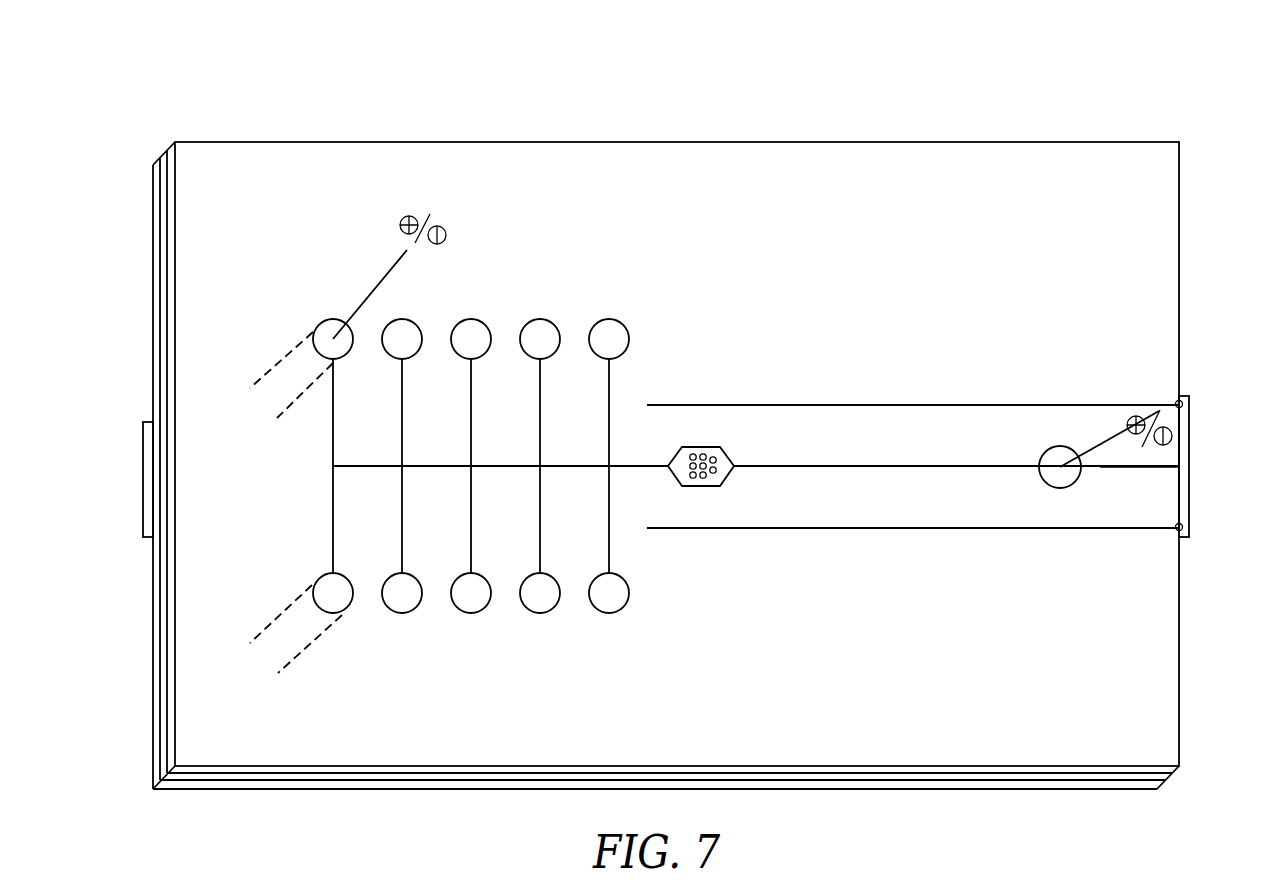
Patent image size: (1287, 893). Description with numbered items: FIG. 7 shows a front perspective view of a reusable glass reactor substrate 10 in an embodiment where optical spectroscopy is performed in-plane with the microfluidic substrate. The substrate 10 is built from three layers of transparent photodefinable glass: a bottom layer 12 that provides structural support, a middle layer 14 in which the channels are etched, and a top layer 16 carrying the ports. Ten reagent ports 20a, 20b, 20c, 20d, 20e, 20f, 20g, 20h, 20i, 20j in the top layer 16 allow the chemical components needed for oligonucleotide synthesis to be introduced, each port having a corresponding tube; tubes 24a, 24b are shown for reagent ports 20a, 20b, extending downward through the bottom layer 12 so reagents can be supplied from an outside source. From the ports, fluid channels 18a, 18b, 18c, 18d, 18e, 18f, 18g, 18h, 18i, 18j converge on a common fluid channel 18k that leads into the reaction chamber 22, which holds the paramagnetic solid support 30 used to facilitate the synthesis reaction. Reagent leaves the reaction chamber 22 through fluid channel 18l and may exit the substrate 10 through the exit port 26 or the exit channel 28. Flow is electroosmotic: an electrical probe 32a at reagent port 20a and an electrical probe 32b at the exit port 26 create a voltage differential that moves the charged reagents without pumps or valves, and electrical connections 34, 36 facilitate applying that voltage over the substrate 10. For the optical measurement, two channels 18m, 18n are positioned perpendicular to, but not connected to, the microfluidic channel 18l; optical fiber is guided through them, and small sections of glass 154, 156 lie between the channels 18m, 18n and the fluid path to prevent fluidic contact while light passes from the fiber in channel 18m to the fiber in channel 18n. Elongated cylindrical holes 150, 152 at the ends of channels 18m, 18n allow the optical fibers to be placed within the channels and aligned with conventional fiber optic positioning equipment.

The reusable glass reactor substrate 10 is at (113, 123).
The bottom layer 12 is at (157, 312).
The middle layer 14 is at (175, 772).
The top layer 16 is at (172, 560).
The electrical connection 34 is at (143, 480).
The electrical connection 36 is at (1192, 452).
The elongated cylindrical hole 150 is at (1177, 401).
The elongated cylindrical hole 152 is at (1177, 532).
The section of glass 154 is at (934, 444).
The section of glass 156 is at (934, 514).
The fluid channel 18a is at (332, 436).
The fluid channel 18b is at (332, 495).
The fluid channel 18c is at (402, 393).
The fluid channel 18d is at (402, 539).
The fluid channel 18e is at (471, 437).
The fluid channel 18f is at (471, 495).
The fluid channel 18g is at (540, 393).
The fluid channel 18h is at (540, 539).
The fluid channel 18i is at (609, 437).
The fluid channel 18j is at (609, 495).
The fluid channel 18k is at (644, 465).
The fluid channel 18l is at (843, 466).
The optical channel 18m is at (772, 404).
The optical channel 18n is at (772, 528).
The reagent port 20a is at (333, 318).
The reagent port 20b is at (342, 612).
The reagent port 20c is at (402, 318).
The reagent port 20d is at (404, 613).
The reagent port 20e is at (471, 318).
The reagent port 20f is at (473, 613).
The reagent port 20g is at (540, 318).
The reagent port 20h is at (542, 613).
The reagent port 20i is at (609, 318).
The reagent port 20j is at (611, 613).
The reaction chamber 22 is at (700, 447).
The tube 24a is at (292, 346).
The tube 24b is at (290, 662).
The exit port 26 is at (1059, 446).
The exit channel 28 is at (1140, 467).
The paramagnetic solid support 30 is at (692, 478).
The electrical probe 32a is at (395, 259).
The electrical probe 32b is at (1108, 436).